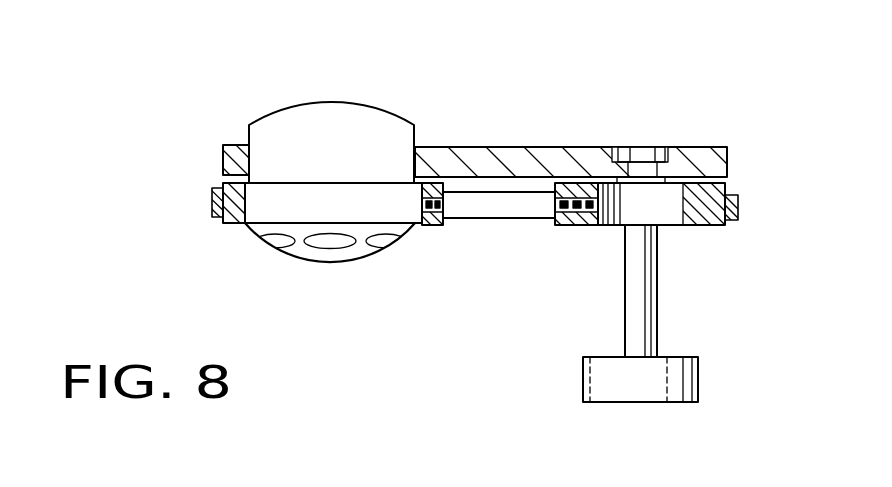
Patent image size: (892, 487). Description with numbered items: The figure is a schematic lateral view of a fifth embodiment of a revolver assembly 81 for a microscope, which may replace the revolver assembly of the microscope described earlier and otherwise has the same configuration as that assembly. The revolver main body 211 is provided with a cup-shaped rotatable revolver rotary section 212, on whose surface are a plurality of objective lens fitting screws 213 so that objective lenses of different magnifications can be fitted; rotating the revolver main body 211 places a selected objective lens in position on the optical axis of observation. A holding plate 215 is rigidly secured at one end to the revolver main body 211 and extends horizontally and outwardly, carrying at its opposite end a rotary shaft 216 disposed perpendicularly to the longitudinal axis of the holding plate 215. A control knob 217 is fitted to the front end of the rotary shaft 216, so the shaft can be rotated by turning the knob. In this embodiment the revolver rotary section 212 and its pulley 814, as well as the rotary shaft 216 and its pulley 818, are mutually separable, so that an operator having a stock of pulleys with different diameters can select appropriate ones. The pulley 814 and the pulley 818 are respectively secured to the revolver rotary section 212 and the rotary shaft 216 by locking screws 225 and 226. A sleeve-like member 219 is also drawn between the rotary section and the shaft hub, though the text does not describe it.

The revolver assembly 81 is at (472, 46).
The revolver main body 211 is at (397, 148).
The revolver rotary section 212 is at (290, 255).
The objective lens fitting screws 213 is at (330, 243).
The holding plate 215 is at (553, 165).
The rotary shaft 216 is at (643, 300).
The control knob 217 is at (682, 380).
The sleeve 219 is at (495, 207).
The locking screw 225 is at (432, 226).
The locking screw 226 is at (580, 227).
The pulley 814 is at (235, 225).
The pulley 818 is at (712, 197).